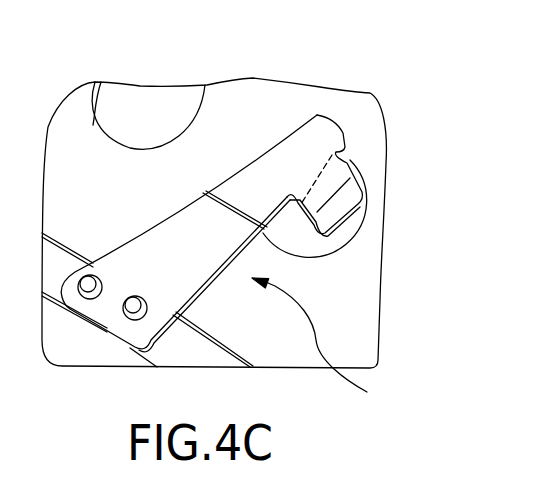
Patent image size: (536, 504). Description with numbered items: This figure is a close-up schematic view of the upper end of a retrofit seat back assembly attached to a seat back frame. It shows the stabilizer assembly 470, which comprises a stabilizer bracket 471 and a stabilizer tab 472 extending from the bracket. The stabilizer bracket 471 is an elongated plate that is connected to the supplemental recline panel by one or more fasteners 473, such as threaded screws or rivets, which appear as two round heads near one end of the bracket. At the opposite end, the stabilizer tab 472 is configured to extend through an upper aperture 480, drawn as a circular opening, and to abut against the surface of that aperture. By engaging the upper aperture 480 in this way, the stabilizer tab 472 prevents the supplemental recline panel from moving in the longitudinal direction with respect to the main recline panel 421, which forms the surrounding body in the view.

The main recline panel 421 is at (350, 268).
The stabilizer assembly 470 is at (327, 346).
The stabilizer bracket 471 is at (262, 178).
The stabilizer tab 472 is at (333, 172).
The fasteners 473 is at (125, 312).
The upper aperture 480 is at (368, 202).